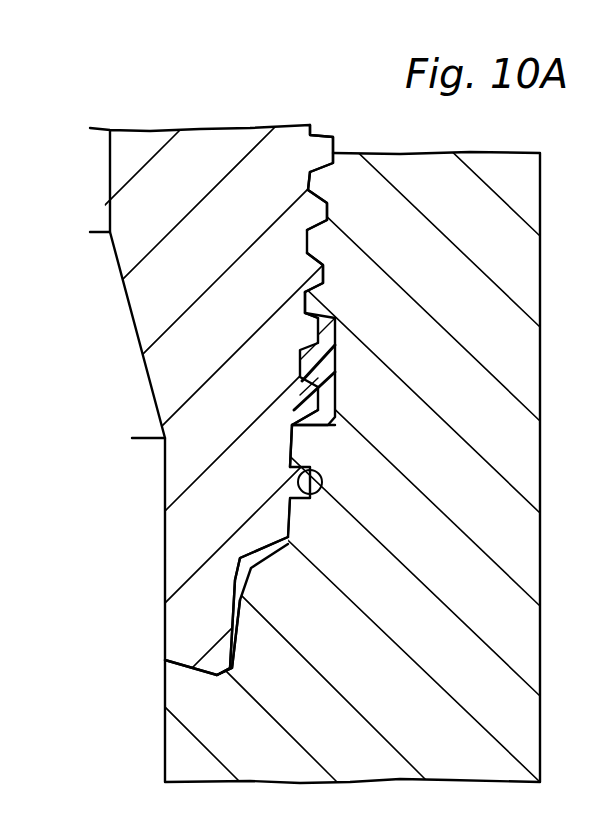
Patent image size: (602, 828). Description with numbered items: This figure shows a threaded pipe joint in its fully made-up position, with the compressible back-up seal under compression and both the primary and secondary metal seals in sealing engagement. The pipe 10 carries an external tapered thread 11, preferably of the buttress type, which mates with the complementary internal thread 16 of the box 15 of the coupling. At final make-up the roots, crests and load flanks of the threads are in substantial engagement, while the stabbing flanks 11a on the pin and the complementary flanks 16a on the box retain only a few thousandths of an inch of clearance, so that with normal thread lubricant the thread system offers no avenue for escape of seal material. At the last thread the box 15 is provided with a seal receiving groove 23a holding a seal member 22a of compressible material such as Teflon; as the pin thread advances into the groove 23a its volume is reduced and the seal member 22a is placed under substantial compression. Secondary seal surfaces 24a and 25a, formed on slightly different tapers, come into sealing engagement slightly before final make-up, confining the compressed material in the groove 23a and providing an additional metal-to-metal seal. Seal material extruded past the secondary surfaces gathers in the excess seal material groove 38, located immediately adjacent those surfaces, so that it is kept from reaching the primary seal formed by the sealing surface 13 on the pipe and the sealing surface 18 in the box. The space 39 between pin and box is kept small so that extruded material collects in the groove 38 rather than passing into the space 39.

The pipe 10 is at (210, 135).
The external tapered thread 11 is at (318, 153).
The sealing surface 13 is at (233, 645).
The box 15 is at (437, 157).
The internal thread 16 is at (318, 183).
The stabbing flanks of box thread 16a is at (313, 283).
The stabbing flanks of pin thread 11a is at (318, 300).
The seal member 22a is at (335, 390).
The seal receiving groove 23a is at (337, 358).
The secondary seal surface 24a is at (302, 447).
The secondary seal surface 25a is at (300, 452).
The excess seal material groove 38 is at (323, 493).
The space between pin and box 39 is at (287, 519).
The sealing surface of box 18 is at (232, 628).